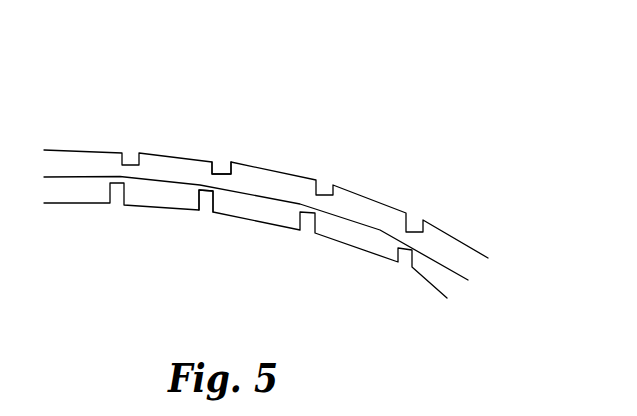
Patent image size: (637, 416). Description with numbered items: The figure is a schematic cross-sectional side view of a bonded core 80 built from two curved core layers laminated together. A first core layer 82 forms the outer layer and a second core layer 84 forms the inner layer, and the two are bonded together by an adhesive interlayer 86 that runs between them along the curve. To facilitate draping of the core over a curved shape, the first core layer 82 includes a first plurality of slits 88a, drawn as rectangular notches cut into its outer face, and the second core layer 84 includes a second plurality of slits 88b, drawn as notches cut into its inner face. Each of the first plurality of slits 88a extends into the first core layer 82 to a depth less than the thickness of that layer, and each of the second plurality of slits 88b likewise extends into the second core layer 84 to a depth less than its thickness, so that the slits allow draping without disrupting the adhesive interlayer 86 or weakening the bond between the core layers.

The bonded core 80 is at (316, 172).
The first core layer 82 is at (77, 163).
The second core layer 84 is at (69, 188).
The adhesive interlayer 86 is at (450, 268).
The first plurality of slits 88a is at (222, 157).
The second plurality of slits 88b is at (203, 209).